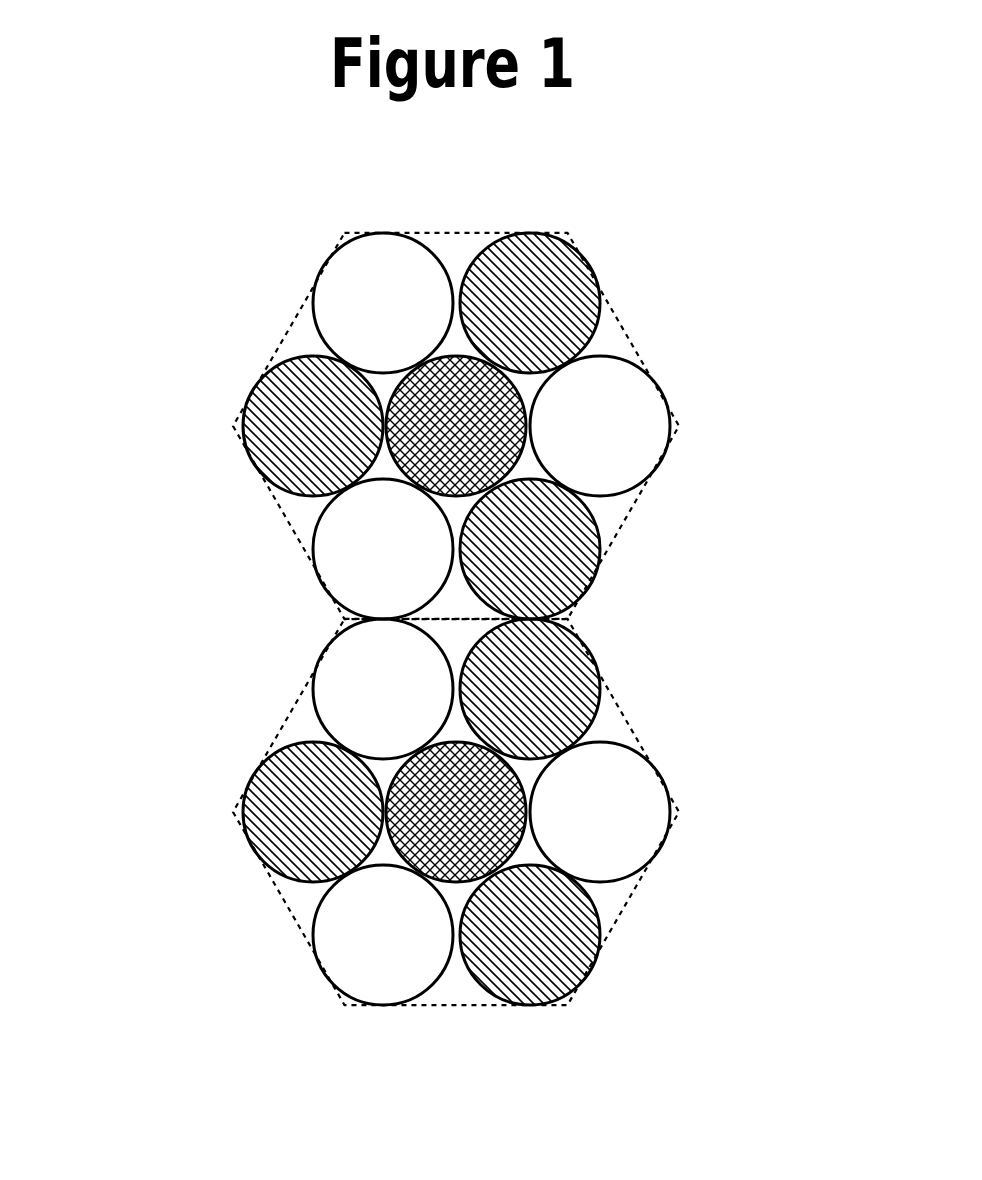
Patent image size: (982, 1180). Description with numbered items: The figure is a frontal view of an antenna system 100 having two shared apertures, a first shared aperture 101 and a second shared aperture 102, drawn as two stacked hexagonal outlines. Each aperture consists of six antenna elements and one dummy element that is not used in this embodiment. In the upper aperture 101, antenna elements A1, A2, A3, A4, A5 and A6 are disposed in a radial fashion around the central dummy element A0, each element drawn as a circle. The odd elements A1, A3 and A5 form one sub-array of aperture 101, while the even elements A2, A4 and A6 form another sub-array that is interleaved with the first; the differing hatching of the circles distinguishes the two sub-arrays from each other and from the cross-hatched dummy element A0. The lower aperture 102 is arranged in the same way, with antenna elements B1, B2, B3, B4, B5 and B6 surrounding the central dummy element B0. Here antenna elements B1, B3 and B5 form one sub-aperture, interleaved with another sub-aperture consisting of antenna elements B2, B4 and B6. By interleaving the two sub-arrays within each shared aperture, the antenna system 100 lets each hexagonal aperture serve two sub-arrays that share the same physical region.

The antenna system 100 is at (150, 366).
The shared aperture 101 is at (630, 337).
The shared aperture 102 is at (630, 718).
The dummy element A0 is at (456, 426).
The antenna element A1 is at (383, 303).
The antenna element A2 is at (530, 303).
The antenna element A3 is at (600, 426).
The antenna element A4 is at (530, 549).
The antenna element A5 is at (383, 549).
The antenna element A6 is at (313, 426).
The dummy element B0 is at (456, 812).
The antenna element B1 is at (383, 689).
The antenna element B2 is at (530, 689).
The antenna element B3 is at (600, 812).
The antenna element B4 is at (530, 935).
The antenna element B5 is at (383, 935).
The antenna element B6 is at (313, 812).